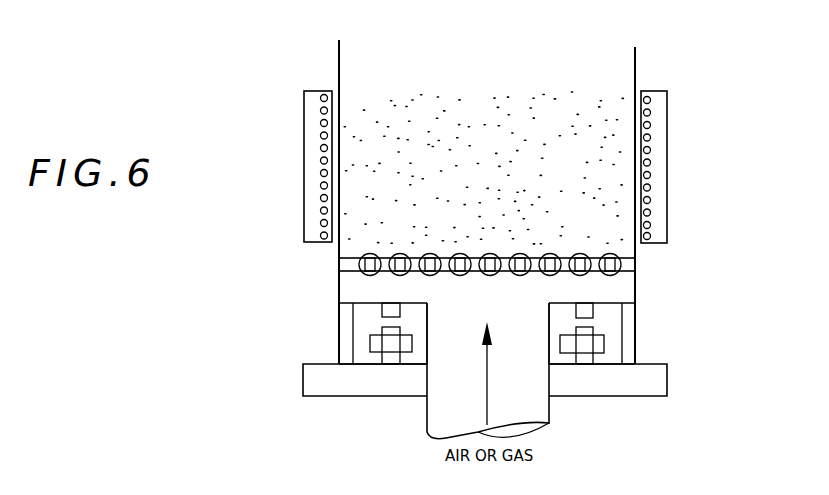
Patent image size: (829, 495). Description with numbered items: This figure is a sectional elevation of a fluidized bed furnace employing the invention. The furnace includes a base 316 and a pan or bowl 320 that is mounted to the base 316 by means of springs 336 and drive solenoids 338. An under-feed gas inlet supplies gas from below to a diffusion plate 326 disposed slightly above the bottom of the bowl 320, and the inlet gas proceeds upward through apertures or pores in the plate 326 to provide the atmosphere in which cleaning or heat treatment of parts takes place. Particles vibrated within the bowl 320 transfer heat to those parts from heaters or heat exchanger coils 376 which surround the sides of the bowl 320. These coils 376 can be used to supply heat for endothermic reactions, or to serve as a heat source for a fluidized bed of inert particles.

The base 316 is at (303, 383).
The pan or bowl 320 is at (336, 259).
The diffusion plate 326 is at (636, 265).
The springs 336 is at (338, 338).
The drive solenoids 338 is at (549, 328).
The heaters or heat exchanger coils 376 is at (668, 125).